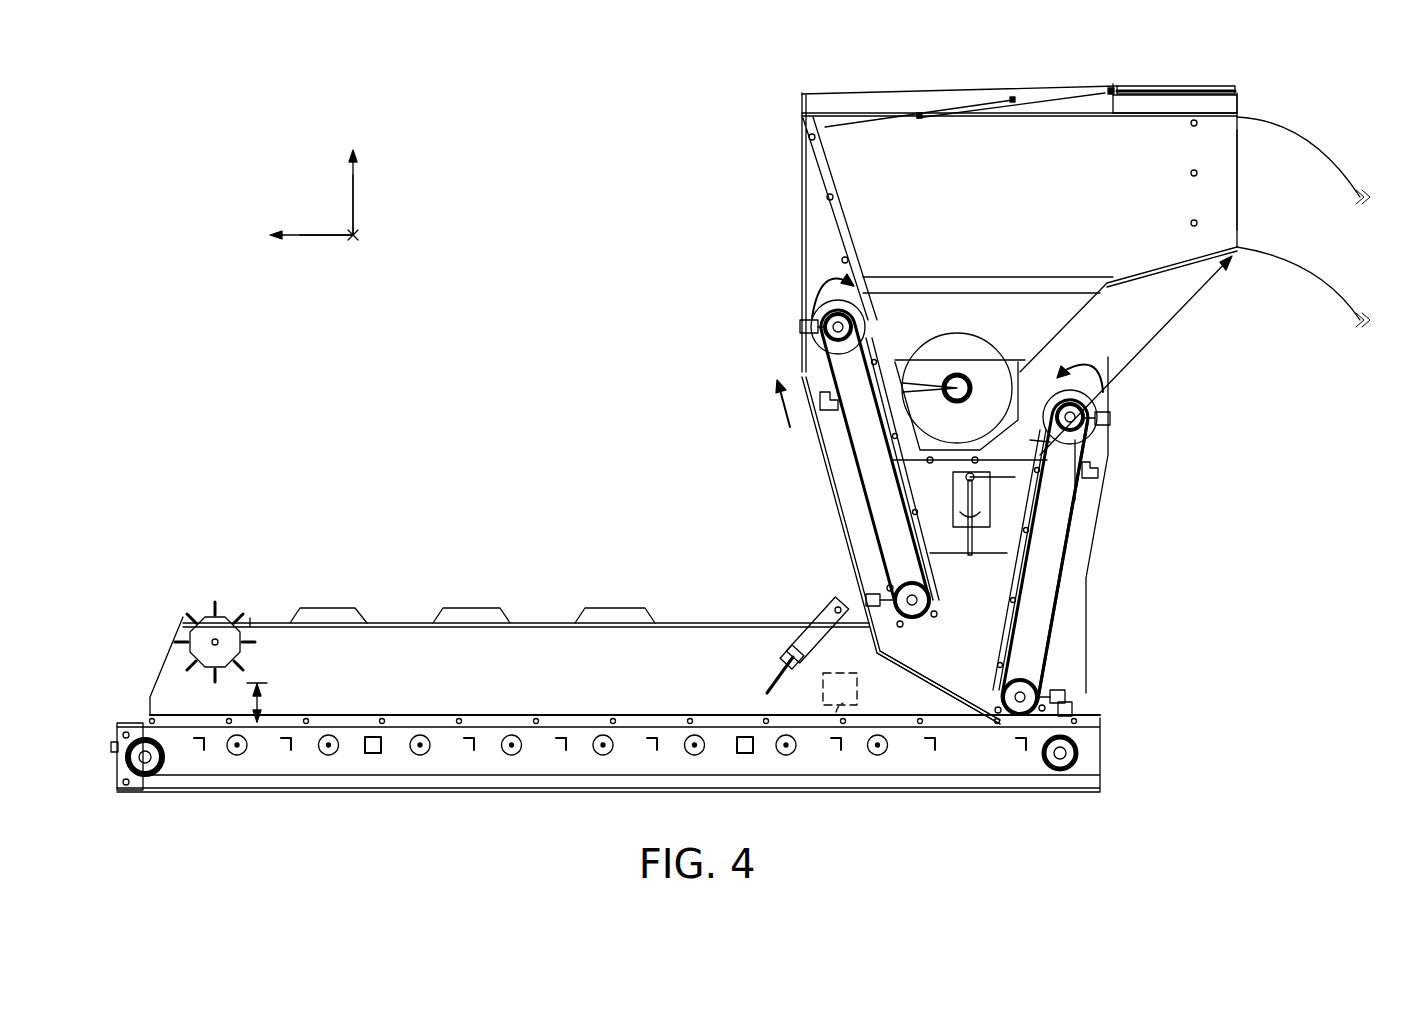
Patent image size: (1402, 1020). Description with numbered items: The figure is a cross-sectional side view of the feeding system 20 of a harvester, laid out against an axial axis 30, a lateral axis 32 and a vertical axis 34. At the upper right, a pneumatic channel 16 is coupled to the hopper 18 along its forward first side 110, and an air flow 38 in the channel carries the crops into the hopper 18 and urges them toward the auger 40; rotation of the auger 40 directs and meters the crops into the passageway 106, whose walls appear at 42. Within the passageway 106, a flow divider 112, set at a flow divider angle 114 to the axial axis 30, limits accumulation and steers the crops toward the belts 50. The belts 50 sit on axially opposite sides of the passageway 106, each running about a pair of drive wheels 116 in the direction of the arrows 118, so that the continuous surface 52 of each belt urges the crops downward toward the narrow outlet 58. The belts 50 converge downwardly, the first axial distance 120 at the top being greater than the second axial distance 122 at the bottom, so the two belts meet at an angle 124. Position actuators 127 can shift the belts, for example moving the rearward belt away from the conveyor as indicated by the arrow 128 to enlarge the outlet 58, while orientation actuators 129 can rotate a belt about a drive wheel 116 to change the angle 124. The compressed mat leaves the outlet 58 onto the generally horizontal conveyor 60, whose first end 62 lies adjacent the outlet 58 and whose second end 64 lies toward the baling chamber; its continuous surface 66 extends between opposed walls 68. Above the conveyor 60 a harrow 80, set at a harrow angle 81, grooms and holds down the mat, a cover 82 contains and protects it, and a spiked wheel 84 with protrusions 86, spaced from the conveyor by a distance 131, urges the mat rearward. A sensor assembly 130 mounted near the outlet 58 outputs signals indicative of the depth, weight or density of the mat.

The pneumatic channel 16 is at (1285, 126).
The hopper 18 is at (1180, 87).
The feeding system 20 is at (642, 128).
The axial axis 30 is at (328, 235).
The lateral axis 32 is at (357, 236).
The vertical axis 34 is at (355, 198).
The air flow 38 is at (1260, 176).
The auger 40 is at (988, 336).
The hopper wall 42 is at (1075, 313).
The belts 50 is at (893, 502).
The continuous surface 52 is at (1040, 640).
The outlet 58 is at (953, 638).
The conveyor 60 is at (462, 727).
The first end 62 is at (993, 690).
The second end 64 is at (278, 727).
The continuous surface 66 is at (480, 713).
The opposed walls 68 is at (528, 637).
The harrow 80 is at (810, 637).
The harrow angle 81 is at (827, 645).
The cover 82 is at (325, 607).
The spiked wheel 84 is at (213, 650).
The protrusions 86 is at (200, 620).
The passageway 106 is at (961, 507).
The first side 110 is at (1240, 103).
The flow divider 112 is at (1055, 520).
The flow divider angle 114 is at (1075, 497).
The drive wheels 116 is at (826, 320).
The arrows 118 is at (853, 290).
The first axial distance 120 is at (1050, 442).
The second axial distance 122 is at (1045, 560).
The angle 124 is at (952, 560).
The position actuators 127 is at (826, 414).
The arrow 128 is at (787, 440).
The orientation actuators 129 is at (800, 323).
The sensor assembly 130 is at (836, 712).
The distance 131 is at (258, 705).